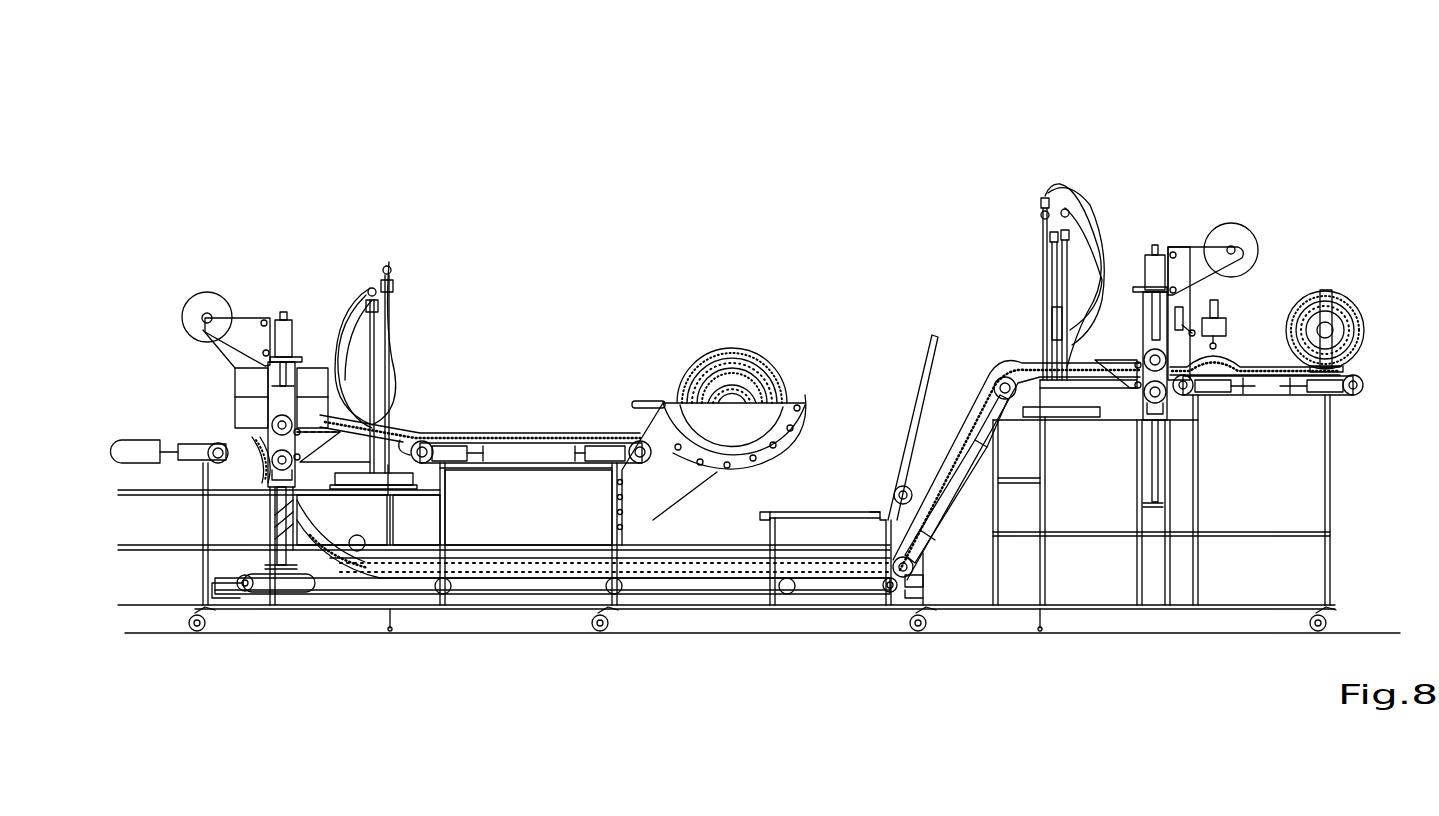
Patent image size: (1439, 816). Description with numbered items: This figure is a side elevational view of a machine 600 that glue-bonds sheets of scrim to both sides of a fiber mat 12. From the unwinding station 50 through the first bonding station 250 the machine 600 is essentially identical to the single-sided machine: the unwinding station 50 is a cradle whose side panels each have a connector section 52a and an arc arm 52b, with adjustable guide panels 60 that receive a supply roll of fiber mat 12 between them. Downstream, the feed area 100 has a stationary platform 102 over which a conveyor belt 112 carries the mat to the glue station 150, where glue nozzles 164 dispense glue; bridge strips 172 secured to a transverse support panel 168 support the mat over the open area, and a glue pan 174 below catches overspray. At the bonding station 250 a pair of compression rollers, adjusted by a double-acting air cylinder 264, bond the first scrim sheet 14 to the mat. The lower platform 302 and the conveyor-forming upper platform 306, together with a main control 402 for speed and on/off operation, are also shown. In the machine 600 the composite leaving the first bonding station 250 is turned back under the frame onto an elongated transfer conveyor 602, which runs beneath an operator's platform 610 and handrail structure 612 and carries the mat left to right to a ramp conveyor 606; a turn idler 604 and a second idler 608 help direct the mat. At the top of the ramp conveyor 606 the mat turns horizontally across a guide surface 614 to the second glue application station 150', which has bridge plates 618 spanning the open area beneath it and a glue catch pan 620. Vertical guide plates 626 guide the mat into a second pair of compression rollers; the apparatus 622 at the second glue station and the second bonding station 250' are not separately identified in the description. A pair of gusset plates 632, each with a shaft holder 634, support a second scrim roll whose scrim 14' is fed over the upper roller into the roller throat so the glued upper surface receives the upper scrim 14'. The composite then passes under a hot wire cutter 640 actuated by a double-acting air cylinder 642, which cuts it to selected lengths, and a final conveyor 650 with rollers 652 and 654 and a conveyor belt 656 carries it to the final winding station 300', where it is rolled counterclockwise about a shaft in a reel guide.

The machine 600 is at (773, 125).
The glue station 150 is at (323, 354).
The second glue application station 150' is at (1165, 347).
The feed area 100 is at (608, 320).
The unwinding station 50 is at (737, 305).
The fiber mat 12 is at (742, 350).
The sheet of scrim 14 is at (226, 360).
The second sheet of scrim 14' is at (1272, 228).
The adjustable guide panels 60 is at (768, 410).
The connector section 52a is at (695, 483).
The arc arm 52b is at (798, 430).
The stationary platform 102 is at (505, 440).
The conveyor belt 112 is at (495, 463).
The glue nozzles 164 is at (388, 372).
The transverse support panel 168 is at (313, 428).
The bridge strips 172 is at (420, 443).
The glue pan 174 is at (382, 478).
The bonding station 250 is at (198, 383).
The second stand 250' is at (1208, 488).
The double-acting air cylinder 264 is at (288, 312).
The final winding station 300' is at (1357, 288).
The lower platform 302 is at (150, 488).
The upper platform 306 is at (135, 447).
The main control 402 is at (240, 400).
The transfer conveyor 602 is at (318, 577).
The turn idler 604 is at (358, 573).
The ramp conveyor 606 is at (960, 477).
The second idler 608 is at (893, 503).
The operator's platform 610 is at (800, 515).
The handrail structure 612 is at (918, 408).
The guide surface 614 is at (1030, 378).
The bridge plates 618 is at (1080, 372).
The glue catch pan 620 is at (1058, 412).
The hydraulic cylinders 622 is at (1040, 313).
The vertical guide plates 626 is at (1150, 265).
The gusset plates 632 is at (1192, 262).
The shaft holder 634 is at (1238, 245).
The hot wire cutter 640 is at (1225, 330).
The double-acting air cylinder 642 is at (1175, 295).
The final conveyor 650 is at (1265, 425).
The roller 652 is at (1352, 385).
The roller 654 is at (1195, 390).
The conveyor belt 656 is at (1285, 395).